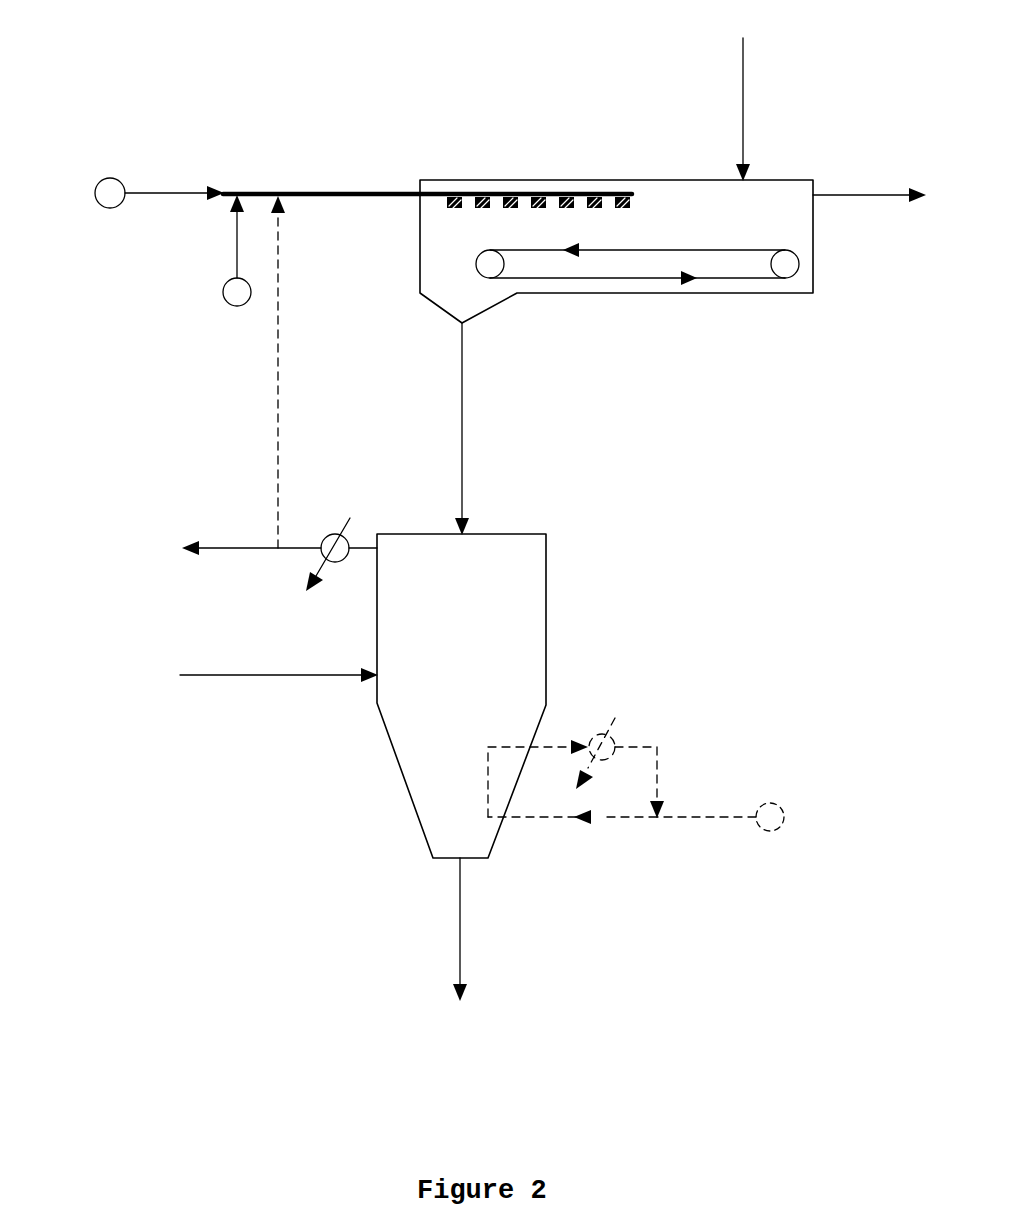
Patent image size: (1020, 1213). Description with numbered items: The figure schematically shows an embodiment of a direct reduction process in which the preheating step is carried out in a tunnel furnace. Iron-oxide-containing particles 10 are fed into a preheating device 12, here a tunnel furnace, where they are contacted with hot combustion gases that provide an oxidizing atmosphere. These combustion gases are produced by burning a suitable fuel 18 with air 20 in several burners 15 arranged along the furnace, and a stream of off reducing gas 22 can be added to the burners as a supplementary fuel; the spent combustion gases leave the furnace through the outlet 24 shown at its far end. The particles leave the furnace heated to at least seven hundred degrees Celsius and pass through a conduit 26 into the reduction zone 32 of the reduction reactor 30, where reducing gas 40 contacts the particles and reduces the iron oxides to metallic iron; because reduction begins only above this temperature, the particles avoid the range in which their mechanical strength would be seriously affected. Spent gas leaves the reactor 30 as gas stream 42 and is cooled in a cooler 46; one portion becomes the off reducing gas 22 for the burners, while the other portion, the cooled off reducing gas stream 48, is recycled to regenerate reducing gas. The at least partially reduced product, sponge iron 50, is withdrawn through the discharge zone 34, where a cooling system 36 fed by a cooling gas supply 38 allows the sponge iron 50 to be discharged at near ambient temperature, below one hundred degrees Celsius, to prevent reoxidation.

The iron-oxide-containing particles 10 is at (743, 121).
The preheating device 12 is at (813, 233).
The burners 15 is at (507, 195).
The fuel 18 is at (104, 180).
The air 20 is at (228, 303).
The off reducing gas 22 is at (278, 378).
The froth outlet 24 is at (843, 195).
The conduit 26 is at (462, 393).
The reduction reactor 30 is at (531, 534).
The reduction zone 32 is at (461, 611).
The discharge zone 34 is at (461, 781).
The cooling system 36 is at (630, 747).
The cooling gas supply 38 is at (770, 803).
The reducing gas 40 is at (295, 675).
The gas stream 42 is at (360, 548).
The cooler 46 is at (330, 535).
The cooled off reducing gas stream 48 is at (240, 548).
The sponge iron 50 is at (462, 917).